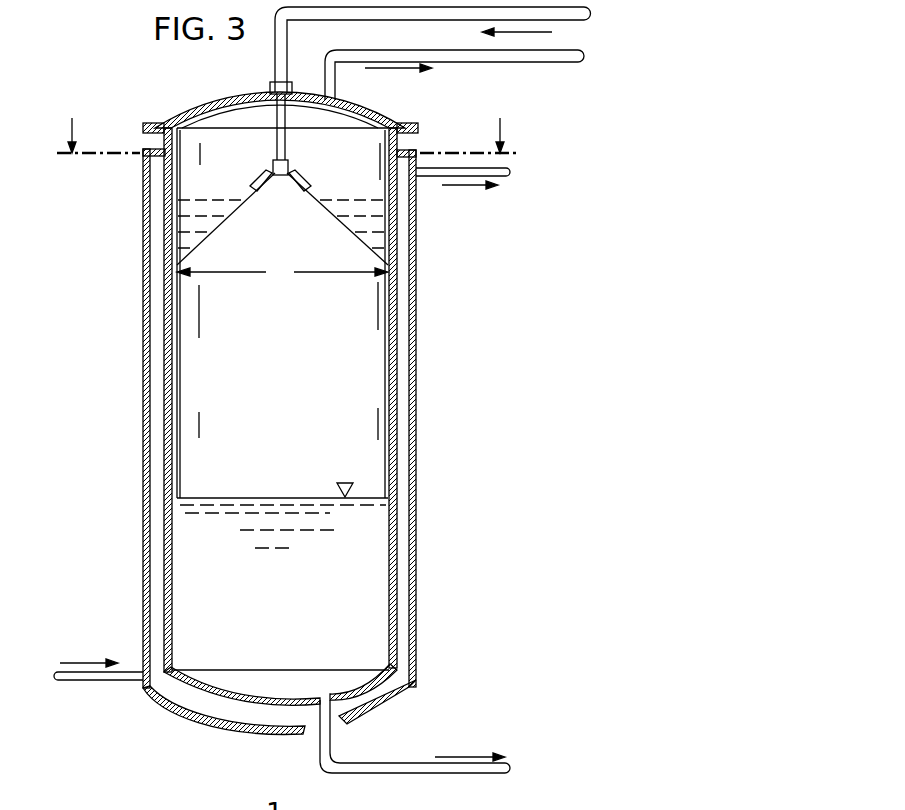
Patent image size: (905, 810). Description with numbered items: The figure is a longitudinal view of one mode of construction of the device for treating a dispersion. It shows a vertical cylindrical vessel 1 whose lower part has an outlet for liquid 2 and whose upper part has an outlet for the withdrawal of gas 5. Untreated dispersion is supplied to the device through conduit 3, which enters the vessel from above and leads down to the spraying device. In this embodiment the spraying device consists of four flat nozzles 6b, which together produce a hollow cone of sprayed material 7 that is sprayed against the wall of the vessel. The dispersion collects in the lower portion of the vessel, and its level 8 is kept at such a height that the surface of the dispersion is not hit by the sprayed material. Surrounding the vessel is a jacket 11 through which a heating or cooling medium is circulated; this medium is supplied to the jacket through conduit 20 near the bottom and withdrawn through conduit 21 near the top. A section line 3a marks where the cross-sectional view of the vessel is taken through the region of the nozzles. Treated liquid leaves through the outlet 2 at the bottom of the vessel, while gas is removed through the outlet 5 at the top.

The vertical cylindrical vessel 1 is at (165, 372).
The outlet for liquid 2 is at (390, 775).
The conduit 3 is at (430, 20).
The section line 3a— 3a is at (285, 120).
The outlet for the withdrawal of gas 5 is at (575, 62).
The flat nozzles 6b is at (290, 168).
The hollow cone of sprayed material 7 is at (282, 313).
The level of the dispersion 8 is at (193, 570).
The jacket 11 is at (417, 408).
The conduit 20 is at (90, 680).
The conduit 21 is at (512, 177).